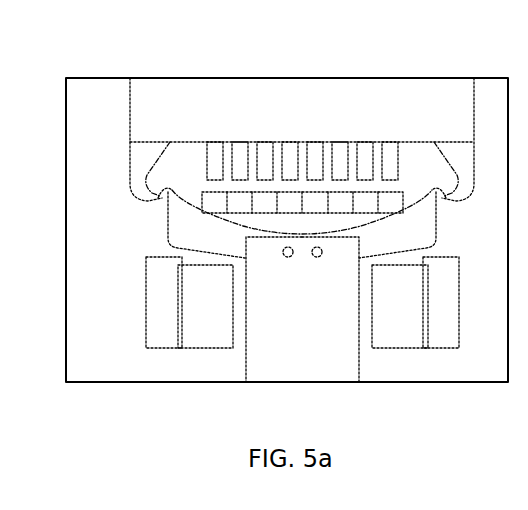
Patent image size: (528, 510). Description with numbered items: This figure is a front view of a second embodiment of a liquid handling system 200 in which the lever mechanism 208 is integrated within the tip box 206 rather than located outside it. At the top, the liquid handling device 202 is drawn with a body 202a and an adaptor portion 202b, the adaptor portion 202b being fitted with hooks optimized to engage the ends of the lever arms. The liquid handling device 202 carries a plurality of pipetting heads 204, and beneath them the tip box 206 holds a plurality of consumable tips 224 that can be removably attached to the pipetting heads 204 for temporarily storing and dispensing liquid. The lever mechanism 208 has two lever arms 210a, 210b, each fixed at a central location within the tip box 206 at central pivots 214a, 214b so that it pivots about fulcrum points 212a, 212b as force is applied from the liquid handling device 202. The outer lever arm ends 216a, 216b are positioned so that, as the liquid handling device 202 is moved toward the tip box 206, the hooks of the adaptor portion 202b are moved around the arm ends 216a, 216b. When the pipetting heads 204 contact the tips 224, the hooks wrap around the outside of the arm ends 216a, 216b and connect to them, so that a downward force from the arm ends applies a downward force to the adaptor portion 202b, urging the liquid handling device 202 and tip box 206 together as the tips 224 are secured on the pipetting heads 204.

The liquid handling system 200 is at (115, 286).
The liquid handling device 202 is at (131, 78).
The body 202a is at (274, 100).
The adaptor portion 202b is at (138, 167).
The pipetting heads 204 is at (343, 138).
The tip box 206 is at (452, 307).
The lever mechanism 208 is at (258, 209).
The lever arm 210a is at (202, 240).
The lever arm 210b is at (395, 240).
The fulcrum point 212a is at (257, 258).
The fulcrum point 212b is at (344, 258).
The central pivot 214a is at (288, 257).
The central pivot 214b is at (317, 257).
The lever arm end 216a is at (168, 197).
The lever arm end 216b is at (437, 187).
The consumable tips 224 is at (369, 183).